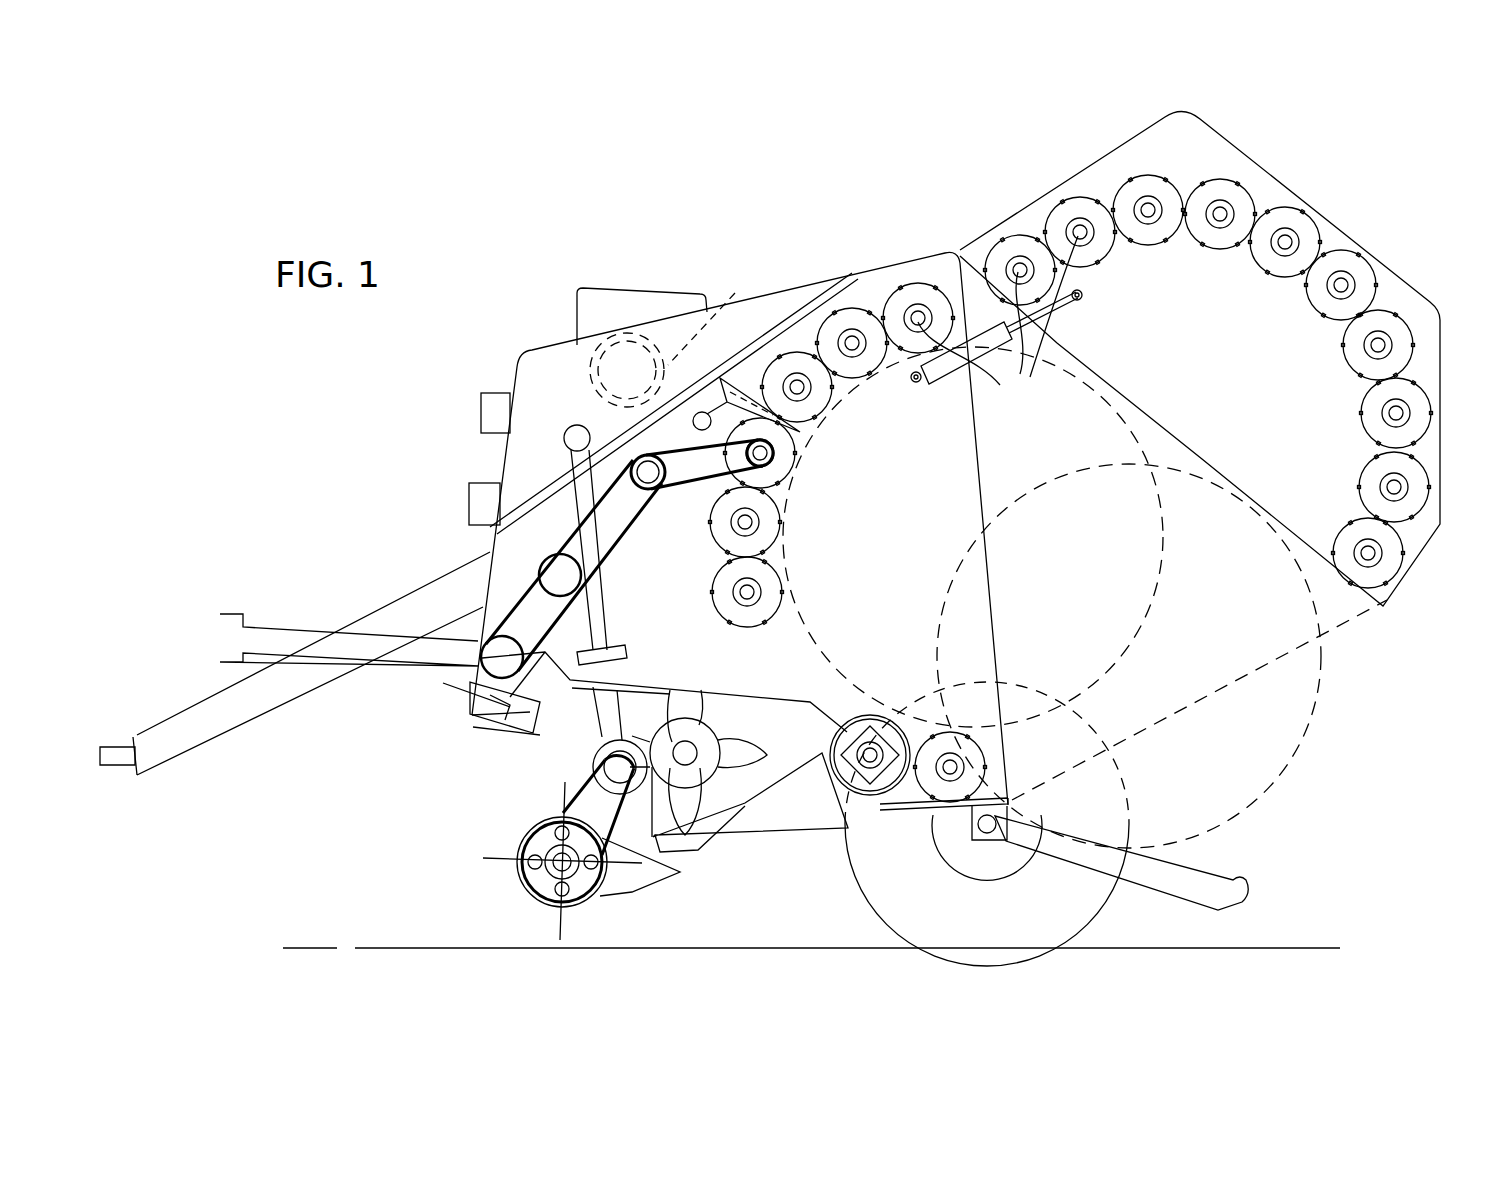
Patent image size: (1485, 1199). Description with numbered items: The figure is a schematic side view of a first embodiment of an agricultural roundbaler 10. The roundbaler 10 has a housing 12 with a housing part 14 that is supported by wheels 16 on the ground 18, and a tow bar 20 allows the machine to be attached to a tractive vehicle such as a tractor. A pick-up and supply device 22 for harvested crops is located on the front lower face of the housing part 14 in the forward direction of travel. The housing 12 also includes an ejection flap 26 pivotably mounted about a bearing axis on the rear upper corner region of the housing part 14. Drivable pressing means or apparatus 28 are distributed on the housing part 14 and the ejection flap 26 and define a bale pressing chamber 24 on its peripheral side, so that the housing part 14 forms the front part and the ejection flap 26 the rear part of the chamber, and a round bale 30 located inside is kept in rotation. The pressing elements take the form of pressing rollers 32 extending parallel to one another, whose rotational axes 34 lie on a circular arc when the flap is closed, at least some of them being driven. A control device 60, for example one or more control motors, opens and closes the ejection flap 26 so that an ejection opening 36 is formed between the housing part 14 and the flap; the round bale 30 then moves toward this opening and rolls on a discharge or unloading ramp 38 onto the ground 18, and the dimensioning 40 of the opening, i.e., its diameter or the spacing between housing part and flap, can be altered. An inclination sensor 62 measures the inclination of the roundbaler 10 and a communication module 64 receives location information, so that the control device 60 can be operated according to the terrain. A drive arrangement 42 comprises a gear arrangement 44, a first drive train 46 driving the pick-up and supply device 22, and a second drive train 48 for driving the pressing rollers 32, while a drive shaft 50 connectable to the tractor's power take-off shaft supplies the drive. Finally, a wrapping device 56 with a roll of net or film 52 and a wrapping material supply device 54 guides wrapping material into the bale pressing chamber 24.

The roundbaler 10 is at (428, 445).
The housing 12 is at (870, 260).
The housing part 14 is at (878, 505).
The wheels 16 is at (910, 890).
The ground 18 is at (1147, 948).
The tow bar 20 is at (242, 707).
The pick-up and supply device 22 is at (540, 880).
The bale pressing chamber 24 is at (858, 622).
The ejection flap 26 is at (1257, 347).
The pressing means or apparatus 28 is at (800, 352).
The round bale 30 is at (1233, 740).
The pressing rollers 32 is at (1130, 195).
The rotational axes 34 is at (996, 319).
The ejection opening 36 is at (1354, 650).
The discharge or unloading ramp 38 is at (1145, 877).
The dimensioning of the ejection opening 40 is at (1365, 614).
The drive arrangement 42 is at (490, 740).
The gear arrangement 44 is at (473, 693).
The first drive train 46 is at (598, 752).
The second drive train 48 is at (553, 568).
The drive shaft 50 is at (270, 643).
The roll of net or film 52 is at (627, 355).
The wrapping material supply device 54 is at (716, 434).
The wrapping device 56 is at (716, 328).
The control device 60 is at (930, 373).
The inclination sensor 62 is at (481, 407).
The communication module 64 is at (469, 490).